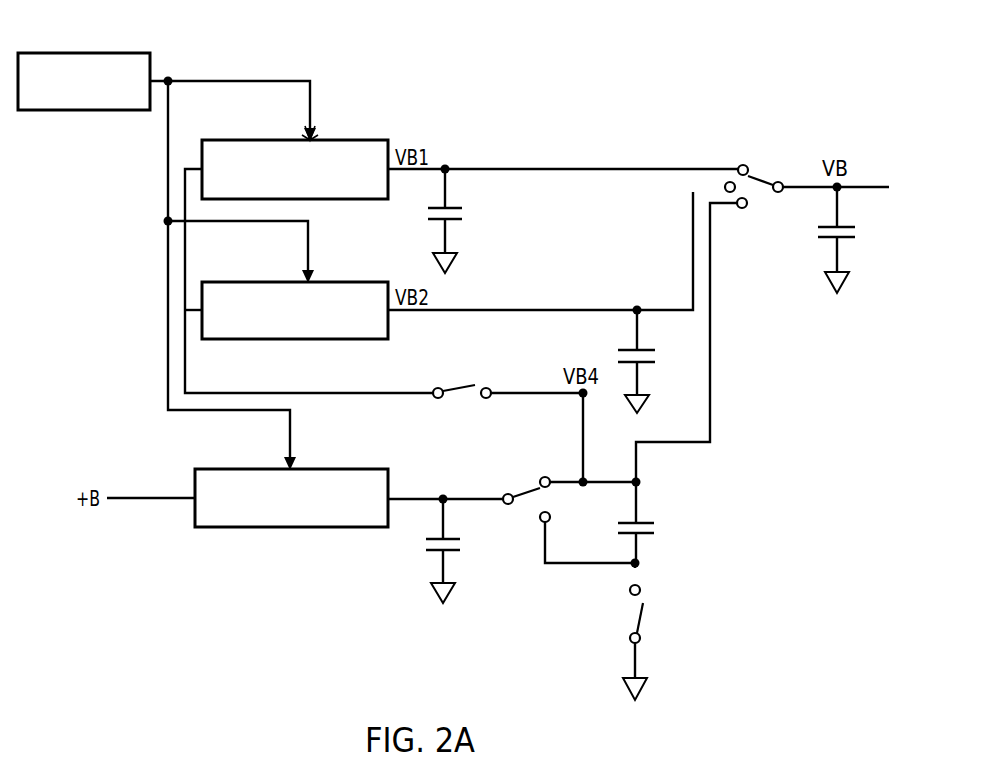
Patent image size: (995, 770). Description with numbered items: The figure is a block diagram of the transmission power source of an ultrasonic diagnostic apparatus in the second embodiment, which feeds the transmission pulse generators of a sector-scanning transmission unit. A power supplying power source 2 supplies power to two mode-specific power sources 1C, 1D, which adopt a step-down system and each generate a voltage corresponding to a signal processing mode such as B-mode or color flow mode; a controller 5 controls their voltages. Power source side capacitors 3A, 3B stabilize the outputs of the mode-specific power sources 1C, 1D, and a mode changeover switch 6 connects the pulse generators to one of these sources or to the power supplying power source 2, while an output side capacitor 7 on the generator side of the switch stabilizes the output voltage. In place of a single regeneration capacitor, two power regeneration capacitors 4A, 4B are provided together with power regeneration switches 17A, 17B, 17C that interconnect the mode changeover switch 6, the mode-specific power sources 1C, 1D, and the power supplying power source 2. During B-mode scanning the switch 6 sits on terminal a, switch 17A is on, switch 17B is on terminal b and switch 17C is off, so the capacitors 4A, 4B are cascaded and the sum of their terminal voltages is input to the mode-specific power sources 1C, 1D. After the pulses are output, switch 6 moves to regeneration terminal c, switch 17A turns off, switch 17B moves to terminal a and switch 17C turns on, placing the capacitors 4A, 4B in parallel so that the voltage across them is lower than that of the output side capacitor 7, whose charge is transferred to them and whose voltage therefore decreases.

The controller 5 is at (127, 53).
The mode-specific power source 1C is at (343, 140).
The mode-specific power source 1D is at (343, 282).
The power supplying power source 2 is at (347, 469).
The power source side capacitor 3A is at (428, 215).
The power source side capacitor 3B is at (618, 353).
The power regeneration capacitor 4A is at (426, 545).
The power regeneration capacitor 4B is at (618, 530).
The mode changeover switch 6 is at (758, 170).
The output side capacitor 7 is at (818, 233).
The power regeneration switch 17A is at (462, 384).
The power regeneration switch 17B is at (525, 485).
The power regeneration switch 17C is at (630, 607).